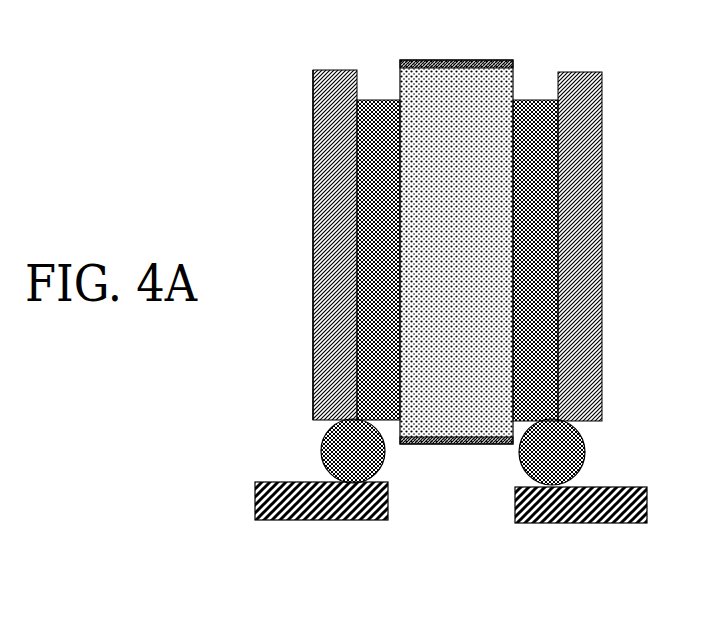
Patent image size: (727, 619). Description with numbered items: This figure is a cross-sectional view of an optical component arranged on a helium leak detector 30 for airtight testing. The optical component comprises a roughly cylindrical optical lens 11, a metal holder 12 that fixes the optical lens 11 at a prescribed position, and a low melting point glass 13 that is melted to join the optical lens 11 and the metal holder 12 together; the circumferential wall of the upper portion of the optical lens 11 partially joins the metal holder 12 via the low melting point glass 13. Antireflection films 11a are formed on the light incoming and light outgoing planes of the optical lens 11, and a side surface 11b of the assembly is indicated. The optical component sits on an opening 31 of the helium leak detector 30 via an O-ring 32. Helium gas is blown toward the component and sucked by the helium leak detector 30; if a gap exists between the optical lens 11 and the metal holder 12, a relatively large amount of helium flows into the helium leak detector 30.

The optical lens 11 is at (468, 228).
The antireflection film 11a is at (475, 60).
The side surface 11b is at (313, 146).
The metal holder 12 is at (328, 70).
The low melting point glass 13 is at (375, 100).
The helium leak detector 30 is at (451, 503).
The opening 31 is at (458, 507).
The O-ring 32 is at (318, 447).